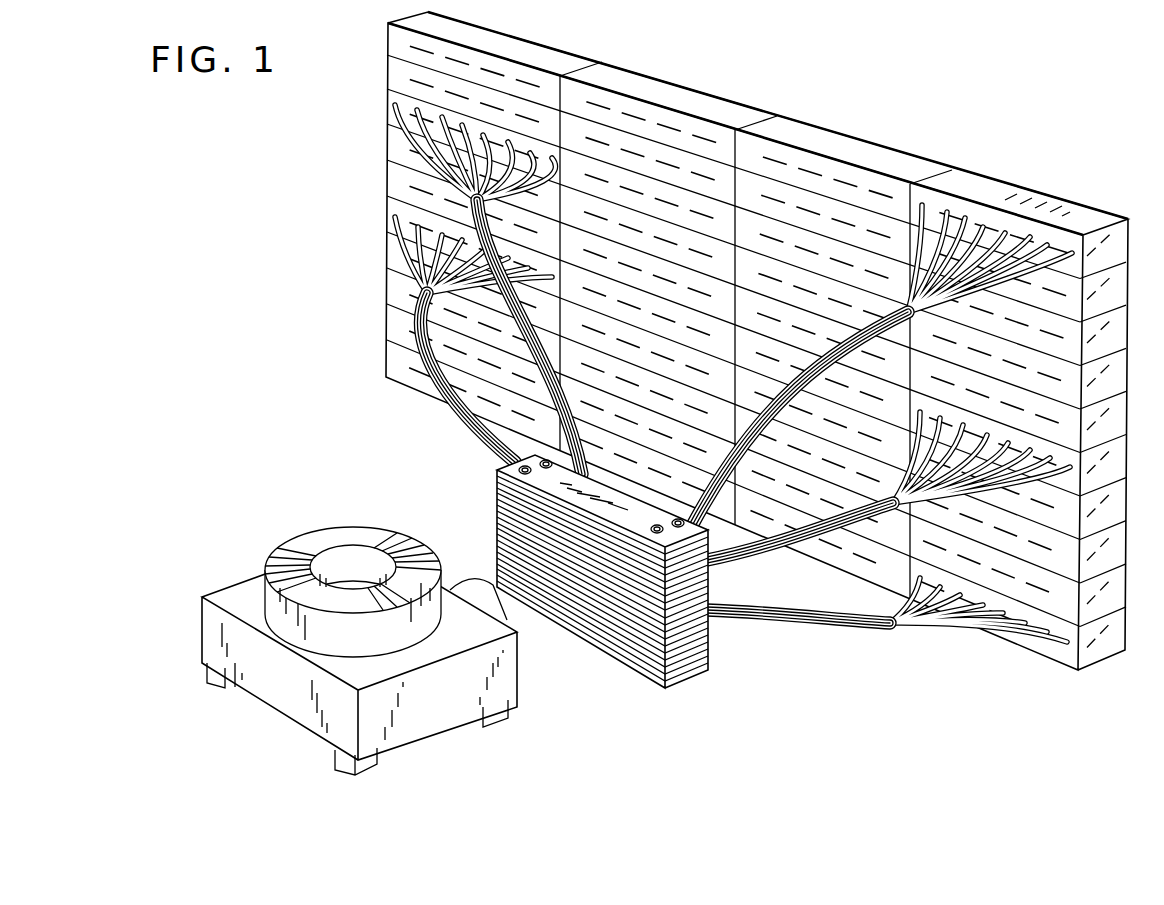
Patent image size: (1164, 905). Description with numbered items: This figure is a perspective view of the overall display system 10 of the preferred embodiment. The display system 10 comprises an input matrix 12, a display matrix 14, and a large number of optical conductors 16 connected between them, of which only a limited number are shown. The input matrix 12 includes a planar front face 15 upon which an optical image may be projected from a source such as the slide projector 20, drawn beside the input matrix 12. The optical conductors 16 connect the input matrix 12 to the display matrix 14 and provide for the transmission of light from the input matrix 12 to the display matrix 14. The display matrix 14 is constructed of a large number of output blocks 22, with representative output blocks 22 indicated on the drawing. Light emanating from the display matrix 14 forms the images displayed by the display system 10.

The display system 10 is at (283, 497).
The input matrix 12 is at (568, 614).
The display matrix 14 is at (370, 238).
The planar front face 15 is at (645, 630).
The optical conductors 16 is at (545, 381).
The slide projector 20 is at (452, 710).
The output blocks 22 is at (975, 185).